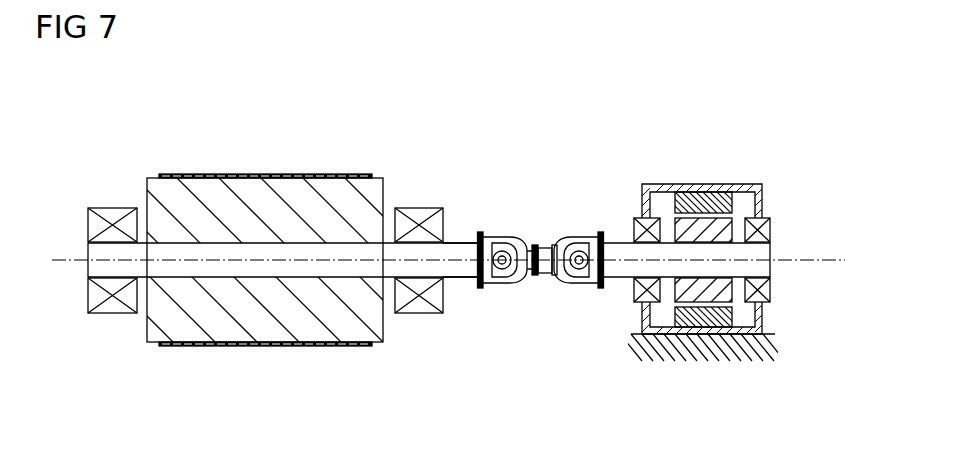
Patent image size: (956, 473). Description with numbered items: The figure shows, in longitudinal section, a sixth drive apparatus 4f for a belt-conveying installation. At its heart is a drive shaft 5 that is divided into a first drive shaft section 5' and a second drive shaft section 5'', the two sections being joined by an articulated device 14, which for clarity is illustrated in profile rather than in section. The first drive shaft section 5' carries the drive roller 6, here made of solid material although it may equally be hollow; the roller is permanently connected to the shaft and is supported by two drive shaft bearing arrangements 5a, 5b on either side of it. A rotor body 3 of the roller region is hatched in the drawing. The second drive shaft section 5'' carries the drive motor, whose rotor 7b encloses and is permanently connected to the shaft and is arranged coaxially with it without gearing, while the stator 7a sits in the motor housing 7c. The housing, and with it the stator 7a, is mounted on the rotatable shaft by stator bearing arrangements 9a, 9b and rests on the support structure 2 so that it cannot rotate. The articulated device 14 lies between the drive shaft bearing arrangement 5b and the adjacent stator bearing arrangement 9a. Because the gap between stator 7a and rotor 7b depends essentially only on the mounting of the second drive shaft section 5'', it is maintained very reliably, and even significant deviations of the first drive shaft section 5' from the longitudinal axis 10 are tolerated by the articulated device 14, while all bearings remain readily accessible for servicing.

The support structure 2 is at (700, 345).
The rotor of the main motor 3 is at (262, 178).
The sixth drive apparatus 4f is at (259, 222).
The drive shaft 5 is at (253, 248).
The first drive shaft section 5' is at (460, 294).
The second drive shaft section 5'' is at (719, 268).
The drive shaft bearing arrangement 5a is at (110, 315).
The drive shaft bearing arrangement 5b is at (422, 313).
The drive roller 6 is at (321, 190).
The stator 7a is at (727, 203).
The rotor 7b is at (687, 220).
The motor housing 7c is at (725, 187).
The stator bearing arrangement 9a is at (633, 226).
The stator bearing arrangement 9b is at (772, 288).
The longitudinal axis of the drive shaft 10 is at (826, 248).
The articulated device 14 is at (547, 287).